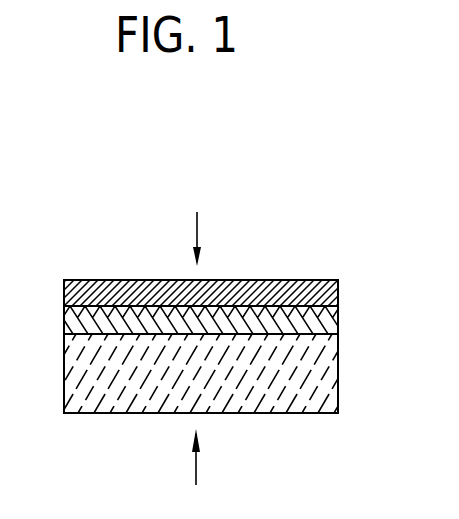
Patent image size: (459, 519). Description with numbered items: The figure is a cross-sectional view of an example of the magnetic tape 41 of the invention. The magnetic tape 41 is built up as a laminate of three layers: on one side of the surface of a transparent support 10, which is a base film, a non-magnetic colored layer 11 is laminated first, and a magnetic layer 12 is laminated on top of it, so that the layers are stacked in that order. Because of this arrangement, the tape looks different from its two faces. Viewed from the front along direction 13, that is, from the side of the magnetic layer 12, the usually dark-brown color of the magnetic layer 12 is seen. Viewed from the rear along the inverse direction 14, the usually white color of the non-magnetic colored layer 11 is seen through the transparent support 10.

The support 10 is at (338, 373).
The non-magnetic colored layer 11 is at (338, 322).
The magnetic layer 12 is at (338, 291).
The direction (from the front) 13 is at (197, 226).
The direction (from the rear) 14 is at (196, 467).
The magnetic tape 41 is at (137, 267).